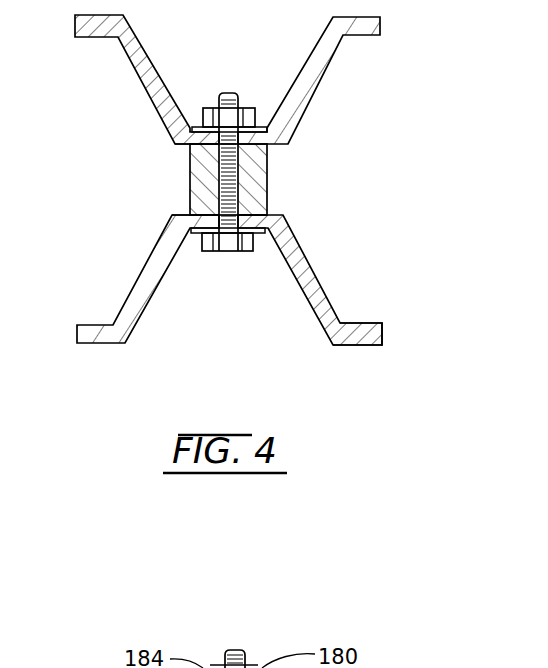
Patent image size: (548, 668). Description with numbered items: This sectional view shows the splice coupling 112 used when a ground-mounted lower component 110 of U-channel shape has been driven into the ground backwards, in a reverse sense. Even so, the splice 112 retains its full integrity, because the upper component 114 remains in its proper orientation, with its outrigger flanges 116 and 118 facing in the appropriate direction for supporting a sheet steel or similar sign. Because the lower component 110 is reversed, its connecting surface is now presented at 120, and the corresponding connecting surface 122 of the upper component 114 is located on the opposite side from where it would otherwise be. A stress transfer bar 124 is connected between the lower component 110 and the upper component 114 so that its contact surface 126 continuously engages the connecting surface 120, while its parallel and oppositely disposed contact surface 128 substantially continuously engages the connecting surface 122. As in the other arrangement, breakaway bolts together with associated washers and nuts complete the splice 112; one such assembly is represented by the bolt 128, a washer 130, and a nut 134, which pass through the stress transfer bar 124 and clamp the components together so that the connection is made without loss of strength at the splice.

The lower component 110 is at (355, 99).
The splice coupling 112 is at (148, 183).
The upper component 114 is at (333, 263).
The outrigger flange 116 is at (105, 345).
The outrigger flange 118 is at (358, 346).
The connecting surface 120 is at (290, 135).
The connecting surface 122 is at (193, 224).
The stress transfer bar 124 is at (270, 175).
The contact surface 126 is at (203, 144).
The contact surface 128 is at (252, 253).
The washer 130 is at (194, 242).
The nut 134 is at (253, 108).